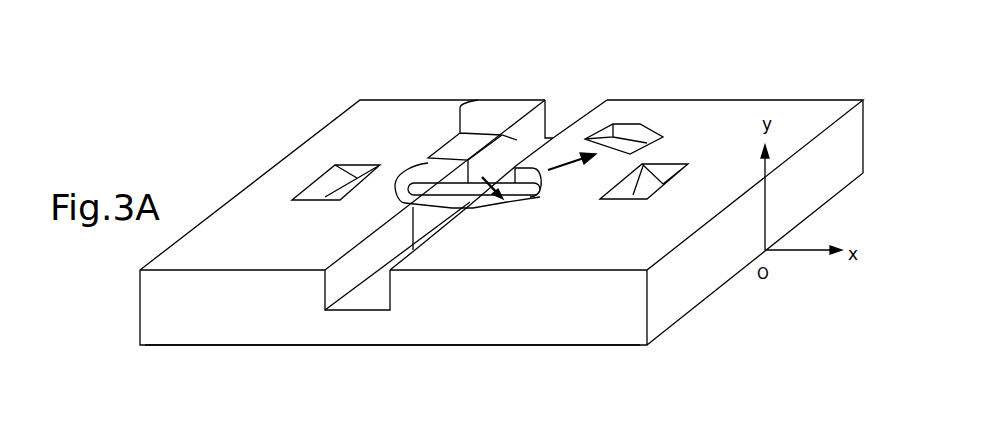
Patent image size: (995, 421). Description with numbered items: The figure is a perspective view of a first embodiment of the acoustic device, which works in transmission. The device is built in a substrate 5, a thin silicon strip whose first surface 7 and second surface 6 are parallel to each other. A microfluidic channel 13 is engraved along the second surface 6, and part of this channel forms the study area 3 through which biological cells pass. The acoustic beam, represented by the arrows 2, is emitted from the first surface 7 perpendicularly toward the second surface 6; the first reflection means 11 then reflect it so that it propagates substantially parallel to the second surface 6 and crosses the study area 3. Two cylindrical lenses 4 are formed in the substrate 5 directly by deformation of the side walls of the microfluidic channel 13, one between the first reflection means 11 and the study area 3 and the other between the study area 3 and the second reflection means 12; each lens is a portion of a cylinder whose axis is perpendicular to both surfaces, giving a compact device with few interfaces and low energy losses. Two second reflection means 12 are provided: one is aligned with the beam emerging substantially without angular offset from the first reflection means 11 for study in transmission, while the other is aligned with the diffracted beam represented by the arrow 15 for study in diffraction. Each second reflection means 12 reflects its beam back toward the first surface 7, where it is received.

The arrows 2 is at (502, 206).
The study area 3 is at (460, 110).
The cylindrical lenses 4 is at (398, 170).
The substrate 5 is at (740, 112).
The second surface 6 is at (636, 112).
The first surface 7 is at (613, 347).
The first reflection means 11 is at (320, 178).
The second reflection means 12 is at (629, 134).
The microfluidic channel 13 is at (360, 300).
The arrow 15 is at (568, 160).